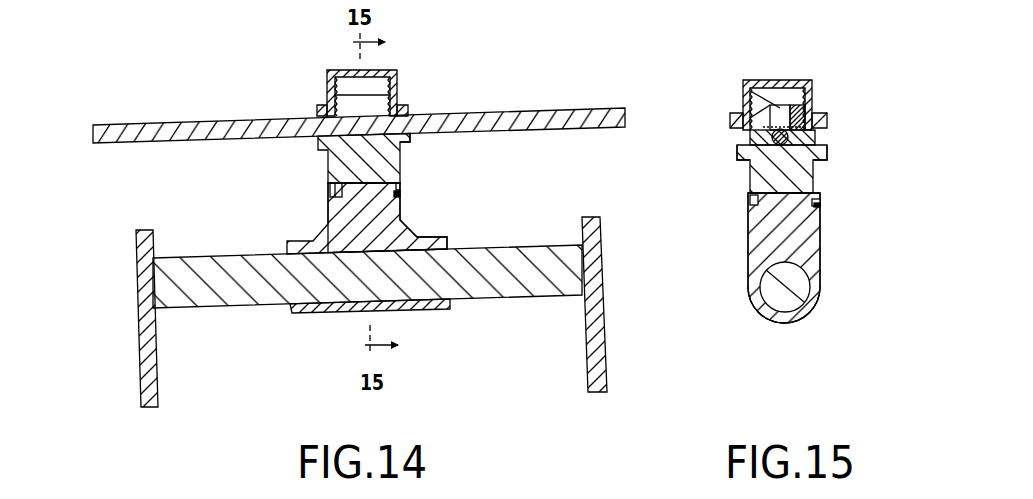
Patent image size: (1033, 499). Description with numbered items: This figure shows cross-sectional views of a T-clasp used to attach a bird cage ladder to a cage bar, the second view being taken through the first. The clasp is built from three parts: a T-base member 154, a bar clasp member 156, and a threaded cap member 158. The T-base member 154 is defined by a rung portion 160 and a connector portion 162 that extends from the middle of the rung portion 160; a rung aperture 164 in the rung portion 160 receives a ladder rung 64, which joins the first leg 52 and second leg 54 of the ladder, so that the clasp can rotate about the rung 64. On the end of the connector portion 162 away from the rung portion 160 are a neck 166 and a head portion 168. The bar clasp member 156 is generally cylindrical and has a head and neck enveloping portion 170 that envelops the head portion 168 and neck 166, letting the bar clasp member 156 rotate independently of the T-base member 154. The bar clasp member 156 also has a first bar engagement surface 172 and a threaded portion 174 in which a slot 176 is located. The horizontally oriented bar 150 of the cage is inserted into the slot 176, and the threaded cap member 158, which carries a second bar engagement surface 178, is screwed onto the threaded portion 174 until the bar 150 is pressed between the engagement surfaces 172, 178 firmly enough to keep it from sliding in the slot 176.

In FIG. 14, the first leg 52 is at (150, 363).
In FIG. 14, the second leg 54 is at (598, 318).
In FIG. 14, the rung 64 is at (517, 263).
In FIG. 14, the horizontally oriented bar 150 is at (135, 124).
In FIG. 15, the horizontally oriented bar 150 is at (818, 137).
In FIG. 14, the T-base member 154 is at (330, 221).
In FIG. 15, the T-base member 154 is at (753, 283).
In FIG. 14, the bar clasp member 156 is at (403, 157).
In FIG. 15, the bar clasp member 156 is at (820, 177).
In FIG. 14, the threaded cap member 158 is at (397, 68).
In FIG. 15, the threaded cap member 158 is at (810, 83).
In FIG. 14, the rung portion 160 is at (287, 248).
In FIG. 15, the rung portion 160 is at (753, 320).
In FIG. 14, the connector portion 162 is at (343, 213).
In FIG. 15, the connector portion 162 is at (758, 248).
In FIG. 15, the rung aperture 164 is at (813, 290).
In FIG. 14, the neck 166 is at (403, 193).
In FIG. 15, the neck 166 is at (822, 208).
In FIG. 14, the head portion 168 is at (403, 186).
In FIG. 15, the head portion 168 is at (818, 203).
In FIG. 14, the head and neck enveloping portion 170 is at (330, 187).
In FIG. 15, the head and neck enveloping portion 170 is at (748, 197).
In FIG. 14, the first bar engagement surface 172 is at (407, 140).
In FIG. 15, the first bar engagement surface 172 is at (825, 155).
In FIG. 14, the threaded portion 174 is at (372, 105).
In FIG. 15, the threaded portion 174 is at (750, 141).
In FIG. 15, the slot 176 is at (752, 92).
In FIG. 14, the second bar engagement surface 178 is at (320, 111).
In FIG. 15, the second bar engagement surface 178 is at (735, 125).